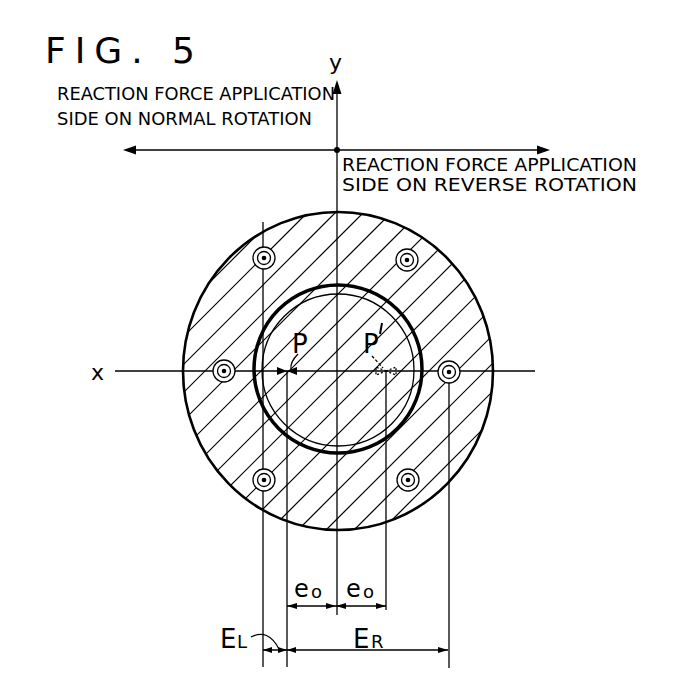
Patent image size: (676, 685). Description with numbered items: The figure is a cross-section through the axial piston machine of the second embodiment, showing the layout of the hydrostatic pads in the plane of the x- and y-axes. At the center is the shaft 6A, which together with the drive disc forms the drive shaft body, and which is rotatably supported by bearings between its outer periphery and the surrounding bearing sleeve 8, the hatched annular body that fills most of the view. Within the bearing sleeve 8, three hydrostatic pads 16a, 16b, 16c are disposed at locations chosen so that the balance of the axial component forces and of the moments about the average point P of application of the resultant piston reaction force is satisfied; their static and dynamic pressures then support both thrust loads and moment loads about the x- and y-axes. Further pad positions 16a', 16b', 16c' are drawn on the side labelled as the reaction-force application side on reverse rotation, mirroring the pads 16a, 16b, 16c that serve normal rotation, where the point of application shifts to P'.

The bearing sleeve 8 is at (208, 458).
The shaft 6A is at (400, 309).
The hydrostatic pad 16a is at (230, 239).
The bolt hole 16a' is at (436, 234).
The hydrostatic pad 16b is at (228, 501).
The bolt hole 16b' is at (457, 502).
The hydrostatic pad 16c is at (492, 394).
The bolt hole 16c' is at (179, 344).